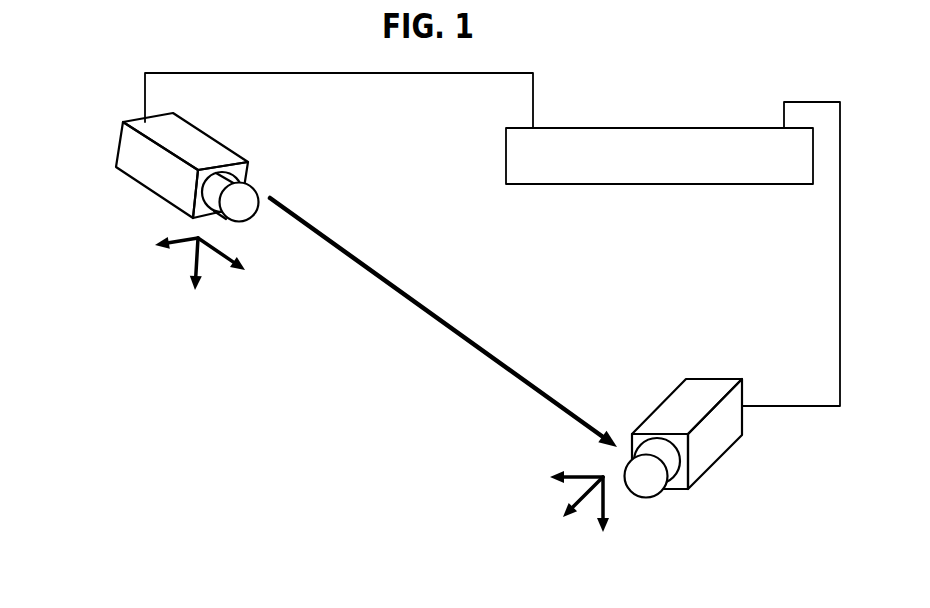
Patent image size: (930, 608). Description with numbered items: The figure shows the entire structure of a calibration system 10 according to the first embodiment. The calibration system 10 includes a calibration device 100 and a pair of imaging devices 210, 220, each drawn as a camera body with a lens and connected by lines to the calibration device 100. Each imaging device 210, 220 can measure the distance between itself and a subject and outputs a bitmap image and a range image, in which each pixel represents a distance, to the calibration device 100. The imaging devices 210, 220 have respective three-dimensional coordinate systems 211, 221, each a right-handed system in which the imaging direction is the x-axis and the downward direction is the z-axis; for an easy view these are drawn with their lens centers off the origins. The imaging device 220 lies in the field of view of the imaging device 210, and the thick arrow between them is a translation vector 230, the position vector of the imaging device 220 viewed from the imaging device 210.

The calibration system 10 is at (290, 449).
The calibration device 100 is at (630, 128).
The imaging device 210 is at (215, 157).
The coordinate system 211 is at (198, 238).
The imaging device 220 is at (700, 392).
The coordinate system 221 is at (603, 477).
The translation vector 230 is at (370, 262).